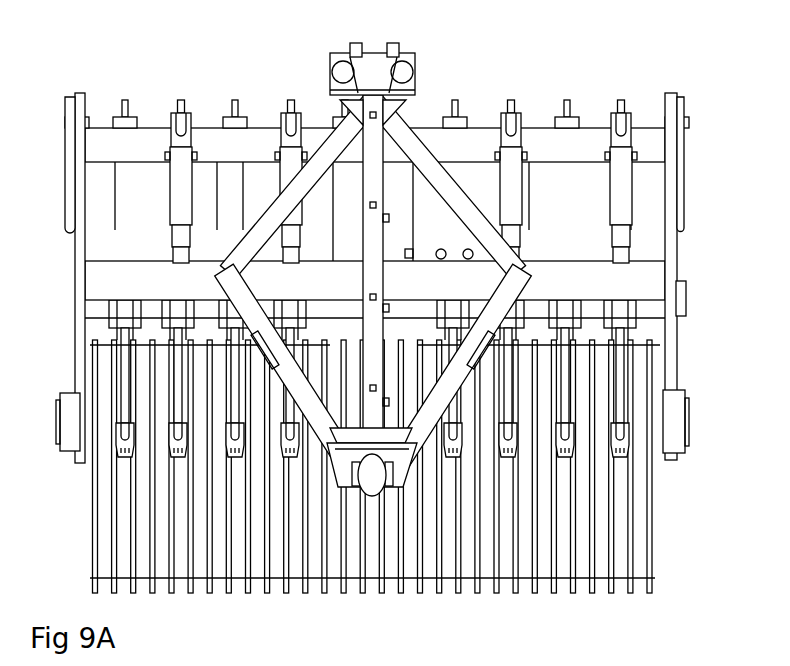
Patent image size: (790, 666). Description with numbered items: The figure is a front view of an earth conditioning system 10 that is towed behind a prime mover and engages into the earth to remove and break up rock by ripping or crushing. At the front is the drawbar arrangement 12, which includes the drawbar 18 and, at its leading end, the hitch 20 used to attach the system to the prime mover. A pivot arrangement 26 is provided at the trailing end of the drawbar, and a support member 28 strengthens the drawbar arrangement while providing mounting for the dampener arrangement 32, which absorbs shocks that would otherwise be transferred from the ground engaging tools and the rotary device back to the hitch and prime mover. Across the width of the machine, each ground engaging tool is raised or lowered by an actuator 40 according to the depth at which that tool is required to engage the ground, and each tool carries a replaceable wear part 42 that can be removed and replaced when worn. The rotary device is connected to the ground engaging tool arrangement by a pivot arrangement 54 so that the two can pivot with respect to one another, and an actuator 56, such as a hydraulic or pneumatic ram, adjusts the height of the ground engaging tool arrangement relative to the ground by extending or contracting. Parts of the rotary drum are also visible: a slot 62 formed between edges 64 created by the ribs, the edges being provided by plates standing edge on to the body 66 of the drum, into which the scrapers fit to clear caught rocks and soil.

The earth conditioning system 10 is at (115, 92).
The front drawbar arrangement 12 is at (445, 387).
The drawbar 18 is at (430, 412).
The hitch 20 is at (368, 470).
The pivot arrangement 26 is at (535, 268).
The support member 28 is at (377, 257).
The dampener arrangement 32 is at (333, 52).
The actuator 40 is at (345, 190).
The replaceable wear part 42 is at (233, 458).
The pivot arrangement 54 is at (688, 290).
The actuator 56 is at (683, 200).
The slot 62 is at (352, 520).
The edge 64 is at (380, 547).
The body 66 is at (431, 490).